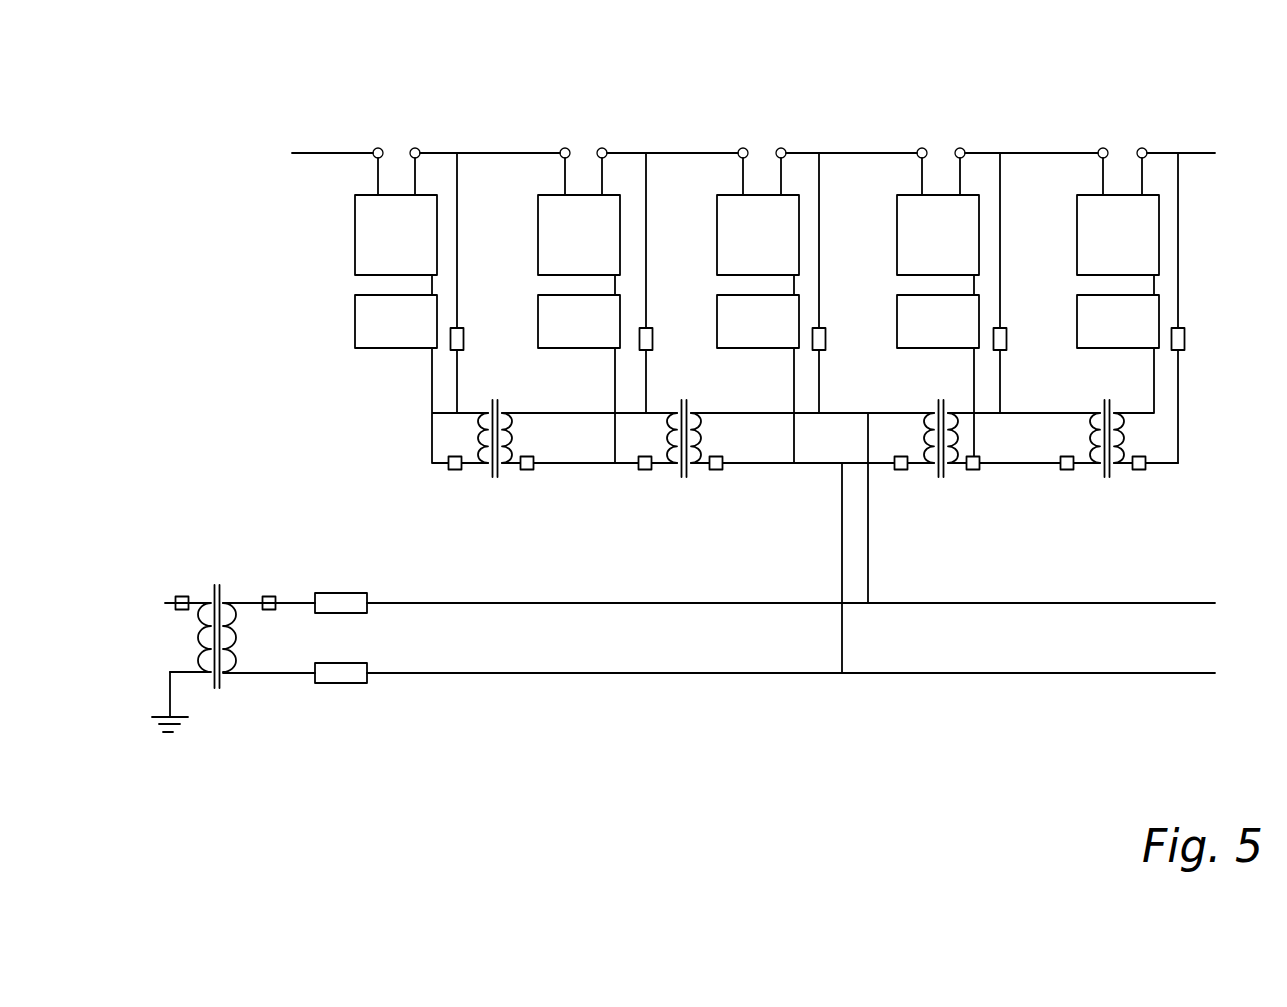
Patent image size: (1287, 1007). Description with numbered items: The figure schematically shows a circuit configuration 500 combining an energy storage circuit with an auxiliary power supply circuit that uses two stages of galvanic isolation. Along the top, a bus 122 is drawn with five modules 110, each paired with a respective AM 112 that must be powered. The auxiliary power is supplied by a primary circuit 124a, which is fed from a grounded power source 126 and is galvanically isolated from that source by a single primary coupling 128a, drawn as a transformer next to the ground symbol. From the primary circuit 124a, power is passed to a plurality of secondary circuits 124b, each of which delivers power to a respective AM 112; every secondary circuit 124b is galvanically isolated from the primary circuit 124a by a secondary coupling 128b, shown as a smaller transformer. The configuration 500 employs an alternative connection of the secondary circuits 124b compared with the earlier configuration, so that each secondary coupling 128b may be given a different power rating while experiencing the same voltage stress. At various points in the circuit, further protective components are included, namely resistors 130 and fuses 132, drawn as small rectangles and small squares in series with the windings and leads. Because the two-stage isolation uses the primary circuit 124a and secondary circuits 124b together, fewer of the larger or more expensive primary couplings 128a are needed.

The circuit configuration 500 is at (214, 80).
The DC bus 122 is at (322, 153).
The battery module 110 is at (1137, 249).
The AM 112 is at (1137, 337).
The resistor 130 is at (464, 340).
The fuse 132 is at (455, 471).
The primary circuit 124a is at (585, 674).
The secondary circuit 124b is at (431, 414).
The primary coupling 128a is at (219, 563).
The secondary coupling 128b is at (492, 496).
The grounded power source 126 is at (168, 690).